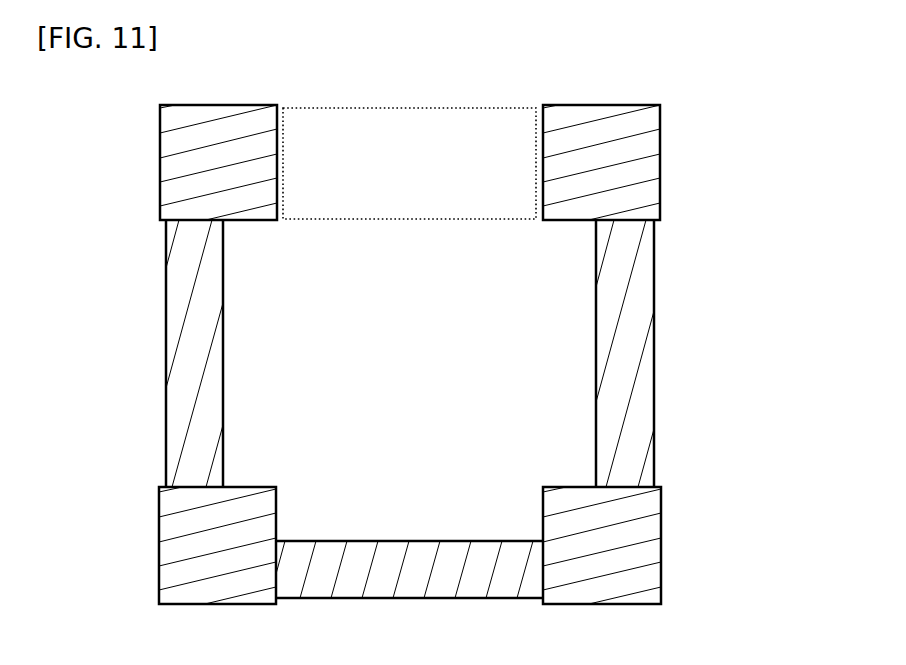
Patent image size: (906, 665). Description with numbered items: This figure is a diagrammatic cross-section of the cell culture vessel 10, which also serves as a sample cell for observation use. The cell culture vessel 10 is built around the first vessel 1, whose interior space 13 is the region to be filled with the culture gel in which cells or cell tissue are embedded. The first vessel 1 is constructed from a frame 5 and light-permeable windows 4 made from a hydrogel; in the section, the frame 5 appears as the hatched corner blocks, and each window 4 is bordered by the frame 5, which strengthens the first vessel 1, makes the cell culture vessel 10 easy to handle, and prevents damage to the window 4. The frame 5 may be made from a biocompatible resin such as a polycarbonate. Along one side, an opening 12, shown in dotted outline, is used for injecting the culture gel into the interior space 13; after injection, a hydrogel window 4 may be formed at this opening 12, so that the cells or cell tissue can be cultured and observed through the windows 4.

The first vessel 1 is at (725, 208).
The light-permeable window 4 is at (192, 328).
The frame 5 is at (192, 165).
The cell culture vessel 10 is at (678, 93).
The opening 12 is at (343, 107).
The interior space 13 is at (412, 387).